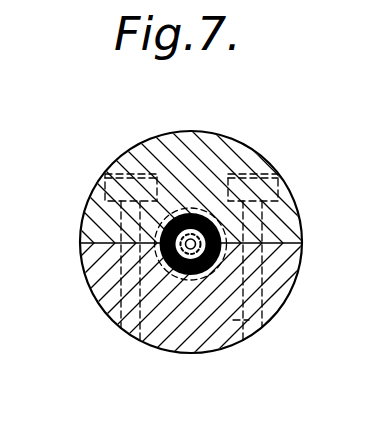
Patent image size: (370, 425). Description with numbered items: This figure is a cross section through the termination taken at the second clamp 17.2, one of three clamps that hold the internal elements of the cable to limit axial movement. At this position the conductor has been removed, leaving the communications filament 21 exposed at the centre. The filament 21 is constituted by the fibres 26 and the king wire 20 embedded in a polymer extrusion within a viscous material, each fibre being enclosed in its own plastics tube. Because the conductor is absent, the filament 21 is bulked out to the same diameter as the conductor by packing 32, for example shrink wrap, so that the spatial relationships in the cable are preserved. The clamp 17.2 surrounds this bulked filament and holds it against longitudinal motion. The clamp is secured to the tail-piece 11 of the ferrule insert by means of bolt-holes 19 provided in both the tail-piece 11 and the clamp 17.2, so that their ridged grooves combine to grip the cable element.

The second clamp 17.2 is at (146, 137).
The packing 32 is at (210, 208).
The bolt-holes 19 is at (83, 213).
The fibres 26 is at (221, 262).
The king wire 20 is at (107, 312).
The tail-piece 11 is at (242, 321).
The communications filament 21 is at (204, 274).